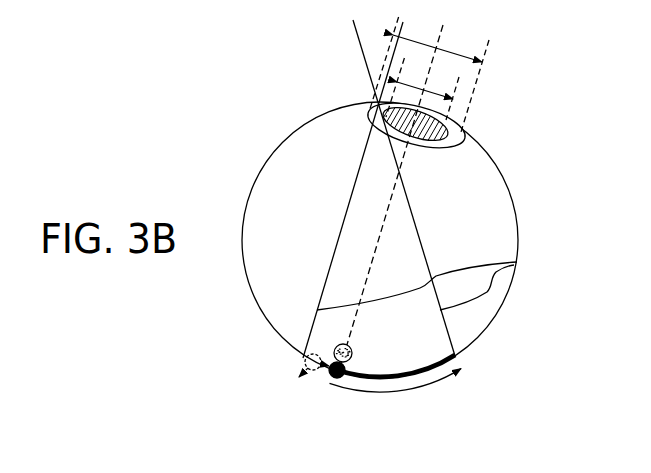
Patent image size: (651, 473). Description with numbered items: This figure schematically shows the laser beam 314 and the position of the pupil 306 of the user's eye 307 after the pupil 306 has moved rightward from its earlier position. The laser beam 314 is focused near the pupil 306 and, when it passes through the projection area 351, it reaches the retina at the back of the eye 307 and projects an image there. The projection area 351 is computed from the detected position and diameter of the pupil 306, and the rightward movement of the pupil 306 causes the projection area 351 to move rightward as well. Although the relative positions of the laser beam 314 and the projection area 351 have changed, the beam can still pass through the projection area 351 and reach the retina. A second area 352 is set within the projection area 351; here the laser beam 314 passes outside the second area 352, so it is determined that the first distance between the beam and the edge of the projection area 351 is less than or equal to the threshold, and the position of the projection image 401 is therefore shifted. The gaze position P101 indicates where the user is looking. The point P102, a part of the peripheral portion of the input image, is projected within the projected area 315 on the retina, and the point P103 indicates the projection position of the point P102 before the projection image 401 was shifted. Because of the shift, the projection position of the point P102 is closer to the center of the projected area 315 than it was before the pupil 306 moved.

The pupil 306 is at (462, 143).
The eye 307 is at (508, 242).
The laser beam 314 is at (517, 262).
The projection area 351 is at (467, 58).
The second area 352 is at (412, 86).
The projection image 401 is at (437, 374).
The projected area 315 is at (397, 392).
The gaze position P101 is at (351, 348).
The point P102 is at (337, 378).
The point P103 is at (311, 370).